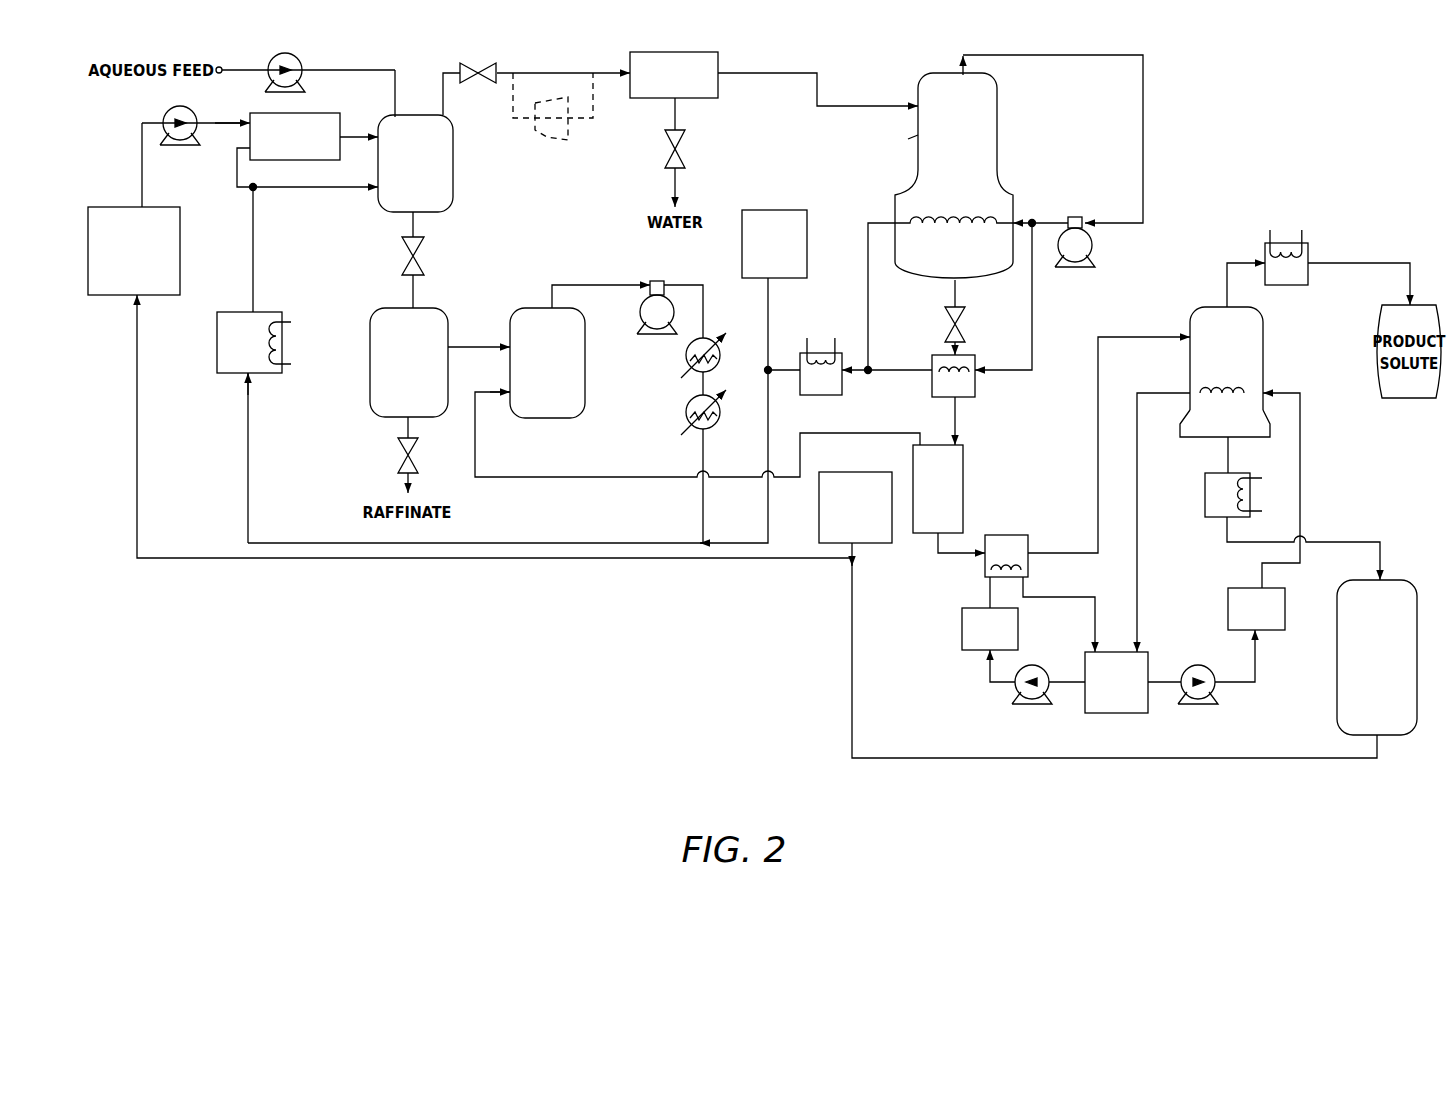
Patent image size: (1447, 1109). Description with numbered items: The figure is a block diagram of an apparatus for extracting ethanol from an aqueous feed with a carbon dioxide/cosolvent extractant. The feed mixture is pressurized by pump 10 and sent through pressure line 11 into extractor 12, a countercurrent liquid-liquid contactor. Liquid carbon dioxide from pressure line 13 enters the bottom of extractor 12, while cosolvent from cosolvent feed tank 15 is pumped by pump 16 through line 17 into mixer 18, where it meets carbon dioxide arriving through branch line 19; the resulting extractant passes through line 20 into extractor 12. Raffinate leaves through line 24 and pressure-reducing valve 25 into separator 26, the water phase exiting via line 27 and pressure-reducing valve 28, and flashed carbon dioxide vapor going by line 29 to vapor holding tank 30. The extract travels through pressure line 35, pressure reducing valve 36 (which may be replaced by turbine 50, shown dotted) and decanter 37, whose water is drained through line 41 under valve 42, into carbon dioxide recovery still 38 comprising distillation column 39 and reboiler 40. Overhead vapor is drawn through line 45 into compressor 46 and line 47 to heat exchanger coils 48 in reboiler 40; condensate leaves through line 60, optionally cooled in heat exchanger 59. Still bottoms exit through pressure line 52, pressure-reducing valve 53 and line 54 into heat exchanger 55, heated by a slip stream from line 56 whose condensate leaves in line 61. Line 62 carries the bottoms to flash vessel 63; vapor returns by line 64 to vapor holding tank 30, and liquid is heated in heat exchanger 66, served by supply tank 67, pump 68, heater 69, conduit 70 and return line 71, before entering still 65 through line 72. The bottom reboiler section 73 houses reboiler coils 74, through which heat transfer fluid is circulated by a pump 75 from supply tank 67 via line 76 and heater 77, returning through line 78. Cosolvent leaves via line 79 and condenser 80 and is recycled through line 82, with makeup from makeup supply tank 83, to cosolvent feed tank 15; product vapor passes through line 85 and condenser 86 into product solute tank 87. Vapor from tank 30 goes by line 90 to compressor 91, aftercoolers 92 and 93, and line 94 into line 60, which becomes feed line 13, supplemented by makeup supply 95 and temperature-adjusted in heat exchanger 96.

The pump 10 is at (297, 59).
The pressure line 11 is at (370, 49).
The extractor 12 is at (427, 113).
The pressure line 13 is at (341, 188).
The cosolvent feed tank 15 is at (168, 204).
The pump 16 is at (191, 107).
The line 17 is at (217, 121).
The mixer 18 is at (318, 112).
The branch line 19 is at (232, 162).
The line 20 is at (357, 134).
The line 24 is at (416, 230).
The pressure-reducing valve 25 is at (418, 258).
The separator 26 is at (425, 306).
The line 27 is at (411, 433).
The pressure-reducing valve 28 is at (412, 458).
The line 29 is at (464, 342).
The vapor holding tank 30 is at (526, 306).
The pressure line 35 is at (452, 60).
The pressure reducing valve 36 is at (485, 48).
The decanter 37 is at (694, 51).
The carbon dioxide recovery still 38 is at (910, 138).
The distillation column 39 is at (999, 121).
The reboiler 40 is at (917, 271).
The line 41 is at (676, 108).
The valve 42 is at (680, 152).
The line 45 is at (1143, 165).
The compressor 46 is at (1093, 242).
The line 47 is at (1024, 220).
The heat exchanger coils 48 is at (982, 217).
The turbine 50 is at (539, 141).
The pressure line 52 is at (958, 295).
The pressure-reducing valve 53 is at (960, 327).
The line 54 is at (960, 350).
The heat exchanger 55 is at (976, 383).
The line 56 is at (1032, 320).
The heat exchanger 59 is at (836, 395).
The line 60 is at (861, 312).
The line 61 is at (906, 354).
The line 62 is at (957, 420).
The flash vessel 63 is at (966, 478).
The line 64 is at (840, 434).
The still 65 is at (1263, 352).
The heat exchanger 66 is at (1004, 534).
The supply tank 67 is at (1116, 714).
The pump 68 is at (1020, 706).
The heater 69 is at (952, 630).
The conduit 70 is at (970, 592).
The line 71 is at (1082, 580).
The line 72 is at (1098, 506).
The bottom reboiler section 73 is at (1198, 437).
The reboiler coils 74 is at (1246, 395).
The heating fluid pump 75 is at (1212, 706).
The line 76 is at (1258, 662).
The heater 77 is at (1272, 588).
The line 78 is at (1138, 600).
The line 79 is at (1230, 458).
The condenser 80 is at (1202, 495).
The line 82 is at (1187, 759).
The makeup supply tank 83 is at (855, 470).
The line 85 is at (1236, 260).
The condenser 86 is at (1310, 250).
The product solute tank 87 is at (1395, 578).
The line 90 is at (588, 264).
The compressor 91 is at (660, 280).
The aftercooler 92 is at (718, 364).
The aftercooler 93 is at (720, 412).
The line 94 is at (723, 486).
The makeup supply 95 is at (776, 276).
The heat exchanger 96 is at (284, 340).